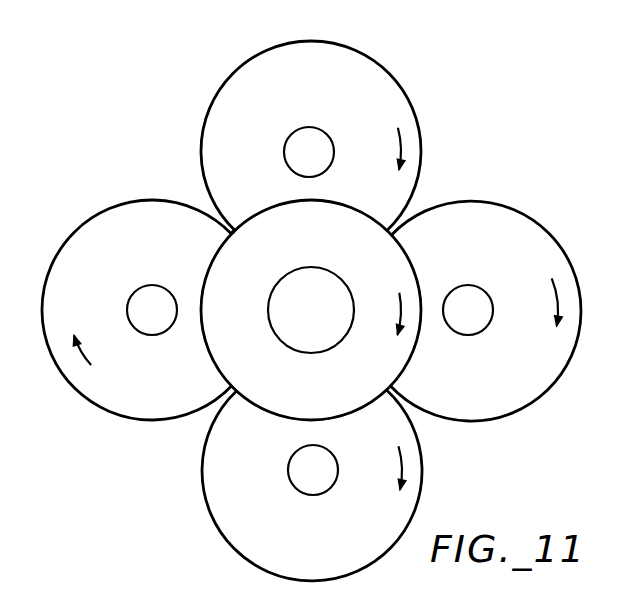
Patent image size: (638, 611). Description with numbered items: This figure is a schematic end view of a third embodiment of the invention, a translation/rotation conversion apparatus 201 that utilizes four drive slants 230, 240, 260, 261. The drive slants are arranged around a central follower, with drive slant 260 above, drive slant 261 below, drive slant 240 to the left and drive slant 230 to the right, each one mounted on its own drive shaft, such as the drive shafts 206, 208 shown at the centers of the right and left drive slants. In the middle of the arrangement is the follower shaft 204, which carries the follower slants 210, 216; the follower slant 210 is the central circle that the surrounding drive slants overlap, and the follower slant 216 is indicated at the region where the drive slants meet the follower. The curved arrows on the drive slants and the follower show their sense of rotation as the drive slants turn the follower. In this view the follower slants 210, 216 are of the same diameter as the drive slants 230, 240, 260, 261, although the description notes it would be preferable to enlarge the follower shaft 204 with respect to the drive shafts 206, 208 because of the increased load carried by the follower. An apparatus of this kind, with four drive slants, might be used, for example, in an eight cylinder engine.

The translation/rotation conversion apparatus 201 is at (461, 101).
The follower shaft 204 is at (332, 285).
The drive shaft 206 is at (463, 325).
The drive shaft 208 is at (173, 323).
The follower slant 210 is at (356, 281).
The follower slant 216 is at (231, 231).
The drive slant 230 is at (495, 315).
The drive slant 240 is at (137, 302).
The drive slant 260 is at (245, 83).
The drive slant 261 is at (398, 427).